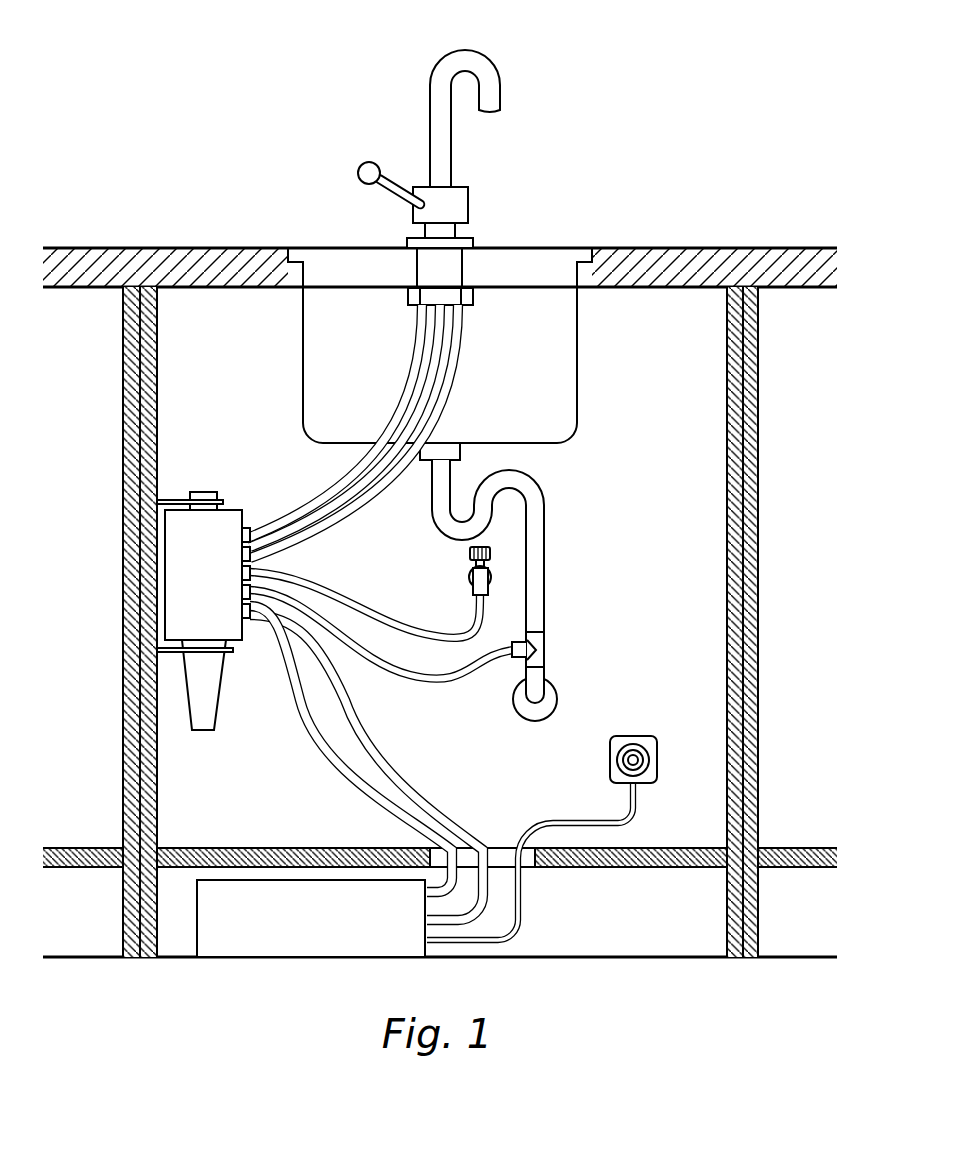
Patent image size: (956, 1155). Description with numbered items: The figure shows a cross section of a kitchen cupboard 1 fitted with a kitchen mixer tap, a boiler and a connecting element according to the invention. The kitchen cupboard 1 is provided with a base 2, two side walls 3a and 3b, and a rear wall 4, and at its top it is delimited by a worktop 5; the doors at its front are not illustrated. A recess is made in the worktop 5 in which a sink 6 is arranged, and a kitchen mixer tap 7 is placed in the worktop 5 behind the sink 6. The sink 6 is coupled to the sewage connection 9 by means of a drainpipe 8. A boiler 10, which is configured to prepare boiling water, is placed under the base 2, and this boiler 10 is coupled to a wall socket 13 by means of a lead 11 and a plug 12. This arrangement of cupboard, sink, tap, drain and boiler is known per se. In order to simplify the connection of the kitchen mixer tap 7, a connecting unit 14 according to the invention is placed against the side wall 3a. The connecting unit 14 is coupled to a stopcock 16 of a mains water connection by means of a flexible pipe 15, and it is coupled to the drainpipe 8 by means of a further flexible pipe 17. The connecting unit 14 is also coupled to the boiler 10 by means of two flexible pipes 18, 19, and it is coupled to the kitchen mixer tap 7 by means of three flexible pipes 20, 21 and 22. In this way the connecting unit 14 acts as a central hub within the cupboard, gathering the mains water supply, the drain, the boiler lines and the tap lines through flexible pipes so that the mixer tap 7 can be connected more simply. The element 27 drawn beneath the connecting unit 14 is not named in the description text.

The kitchen cupboard 1 is at (634, 614).
The base 2 is at (635, 867).
The side wall 3a is at (123, 662).
The side wall 3b is at (758, 670).
The rear wall 4 is at (634, 479).
The worktop 5 is at (711, 247).
The sink 6 is at (575, 345).
The kitchen mixer tap 7 is at (522, 163).
The drainpipe 8 is at (538, 548).
The sewage connection 9 is at (550, 695).
The boiler 10 is at (298, 934).
The lead 11 is at (637, 803).
The plug 12 is at (645, 758).
The wall socket 13 is at (652, 742).
The connecting unit 14 is at (186, 582).
The flexible pipe 15 is at (383, 623).
The stopcock 16 is at (468, 577).
The flexible pipe 17 is at (425, 668).
The flexible pipe 18 is at (340, 785).
The flexible pipe 19 is at (370, 760).
The flexible pipe 20 is at (370, 482).
The flexible pipe 21 is at (320, 537).
The flexible pipe 22 is at (353, 533).
The funnel 27 is at (203, 720).